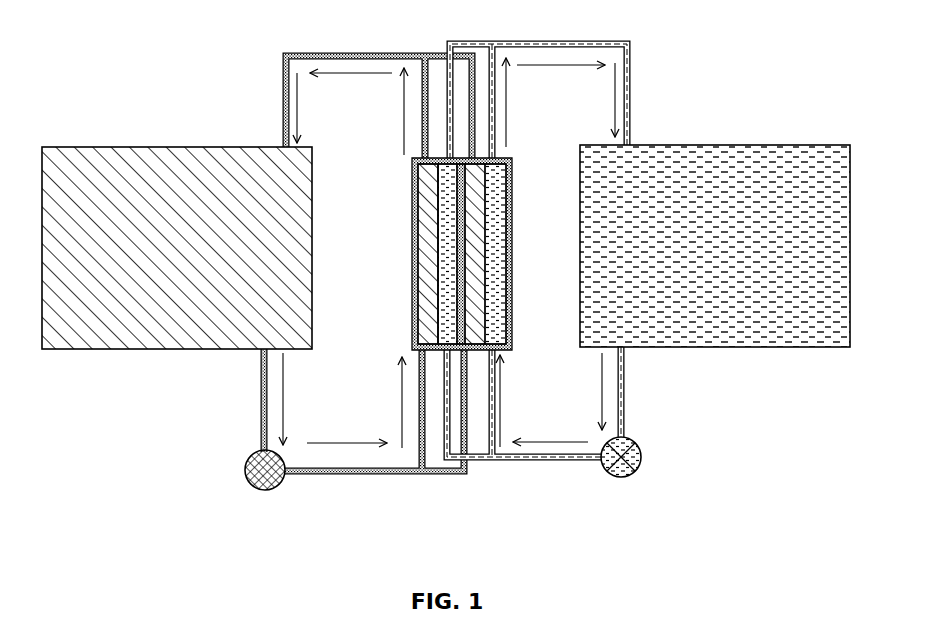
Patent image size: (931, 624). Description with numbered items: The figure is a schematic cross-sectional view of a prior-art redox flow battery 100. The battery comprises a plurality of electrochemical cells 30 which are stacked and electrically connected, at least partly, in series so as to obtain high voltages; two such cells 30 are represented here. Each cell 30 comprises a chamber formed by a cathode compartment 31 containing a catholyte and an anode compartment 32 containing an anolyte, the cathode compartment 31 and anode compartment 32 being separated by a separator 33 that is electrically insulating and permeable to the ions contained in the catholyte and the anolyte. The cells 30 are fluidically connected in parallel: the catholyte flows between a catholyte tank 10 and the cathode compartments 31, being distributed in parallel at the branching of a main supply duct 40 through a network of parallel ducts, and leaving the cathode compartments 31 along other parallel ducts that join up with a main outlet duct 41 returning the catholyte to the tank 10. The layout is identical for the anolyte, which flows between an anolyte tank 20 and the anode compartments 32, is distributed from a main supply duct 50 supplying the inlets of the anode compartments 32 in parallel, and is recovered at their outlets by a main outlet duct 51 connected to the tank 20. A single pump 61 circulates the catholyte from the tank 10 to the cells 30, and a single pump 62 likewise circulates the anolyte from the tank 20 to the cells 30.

The redox flow battery 100 is at (136, 44).
The catholyte tank 10 is at (135, 147).
The anolyte tank 20 is at (735, 145).
The electrochemical cell 30 is at (478, 254).
The cathode compartment 31 is at (460, 282).
The anode compartment 32 is at (457, 317).
The separator 33 is at (434, 178).
The main supply duct 40 is at (392, 477).
The main outlet duct 41 is at (372, 54).
The main supply duct 50 is at (490, 463).
The main outlet duct 51 is at (478, 40).
The pump 61 is at (246, 470).
The pump 62 is at (633, 474).